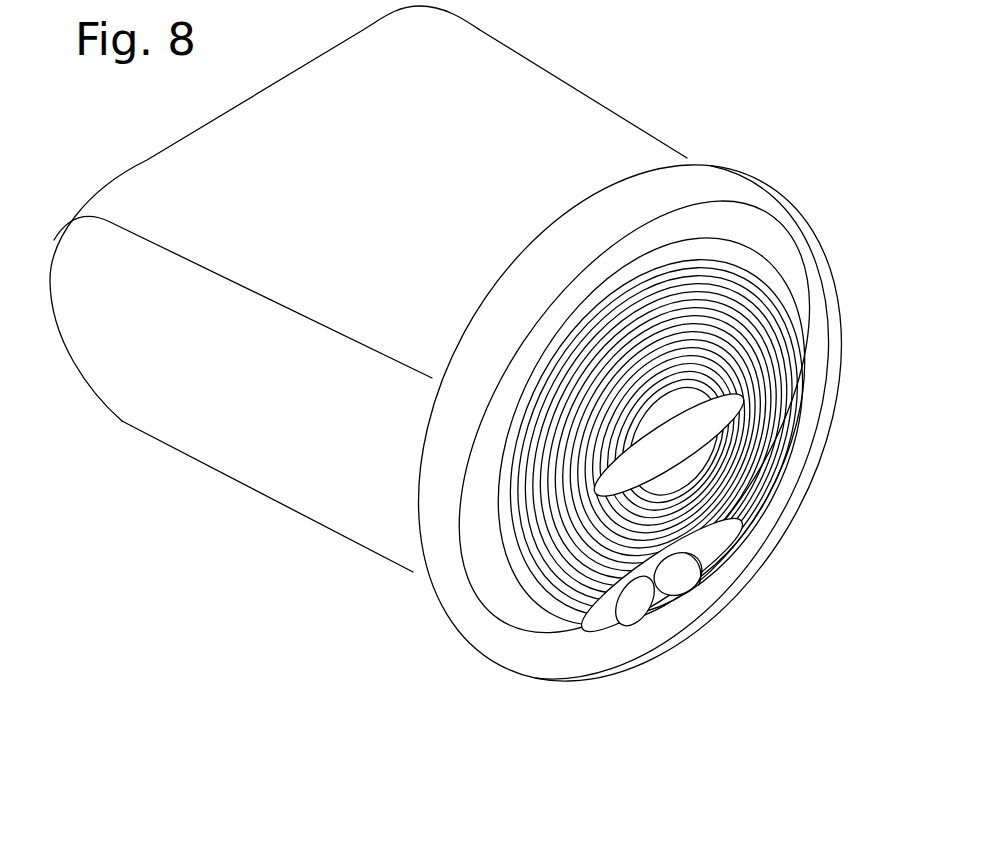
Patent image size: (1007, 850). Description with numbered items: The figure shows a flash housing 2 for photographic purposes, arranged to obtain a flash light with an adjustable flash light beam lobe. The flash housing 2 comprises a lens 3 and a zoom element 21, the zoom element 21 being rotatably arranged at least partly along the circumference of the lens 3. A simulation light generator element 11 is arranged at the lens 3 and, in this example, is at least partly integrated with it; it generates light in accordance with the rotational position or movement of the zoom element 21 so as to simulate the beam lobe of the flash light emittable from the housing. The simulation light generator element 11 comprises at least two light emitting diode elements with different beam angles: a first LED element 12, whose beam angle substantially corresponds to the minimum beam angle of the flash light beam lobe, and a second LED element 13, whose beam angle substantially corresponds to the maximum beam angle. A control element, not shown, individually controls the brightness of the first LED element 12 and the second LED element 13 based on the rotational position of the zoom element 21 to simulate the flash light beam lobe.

The flash housing 2 is at (148, 158).
The zoom element 21 is at (712, 182).
The lens 3 is at (732, 245).
The simulation light generator element 11 is at (642, 627).
The first LED element 12 is at (642, 600).
The second LED element 13 is at (683, 578).